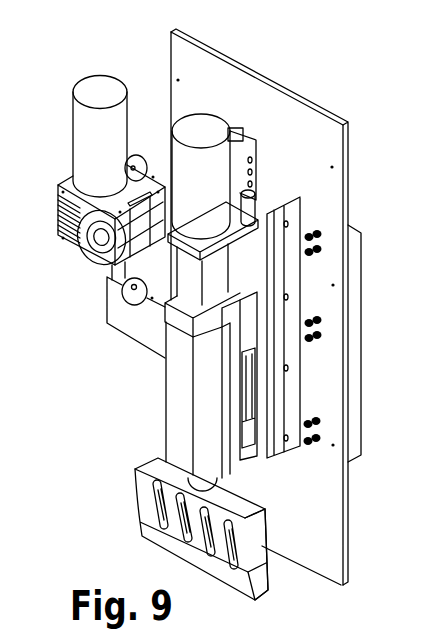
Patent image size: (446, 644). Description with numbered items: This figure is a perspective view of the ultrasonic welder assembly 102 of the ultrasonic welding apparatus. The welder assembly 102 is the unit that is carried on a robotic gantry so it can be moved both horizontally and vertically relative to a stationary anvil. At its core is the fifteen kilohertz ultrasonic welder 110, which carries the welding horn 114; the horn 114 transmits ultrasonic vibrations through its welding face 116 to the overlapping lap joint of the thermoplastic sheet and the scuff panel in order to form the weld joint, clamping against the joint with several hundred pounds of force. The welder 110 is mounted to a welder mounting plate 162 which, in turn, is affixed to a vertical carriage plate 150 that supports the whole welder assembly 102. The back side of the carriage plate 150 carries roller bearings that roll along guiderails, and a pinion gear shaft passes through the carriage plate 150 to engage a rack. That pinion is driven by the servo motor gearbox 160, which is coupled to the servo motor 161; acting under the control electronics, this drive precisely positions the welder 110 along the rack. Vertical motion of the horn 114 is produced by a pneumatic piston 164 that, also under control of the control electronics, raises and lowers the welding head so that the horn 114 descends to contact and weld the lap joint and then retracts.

The ultrasonic welder assembly 102 is at (50, 203).
The ultrasonic welder 110 is at (132, 364).
The welding horn 114 is at (256, 545).
The welding face 116 is at (188, 563).
The carriage plate 150 is at (351, 358).
The servo motor gearbox 160 is at (98, 240).
The servo motor 161 is at (82, 127).
The welder mounting plate 162 is at (345, 508).
The pneumatic piston 164 is at (203, 173).